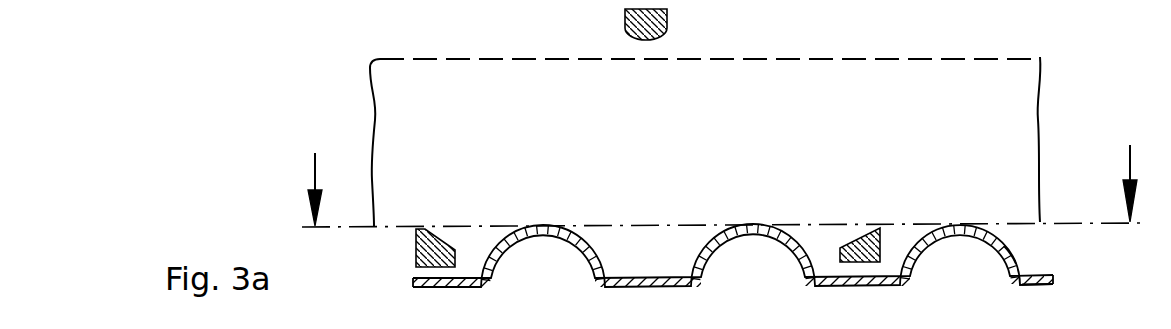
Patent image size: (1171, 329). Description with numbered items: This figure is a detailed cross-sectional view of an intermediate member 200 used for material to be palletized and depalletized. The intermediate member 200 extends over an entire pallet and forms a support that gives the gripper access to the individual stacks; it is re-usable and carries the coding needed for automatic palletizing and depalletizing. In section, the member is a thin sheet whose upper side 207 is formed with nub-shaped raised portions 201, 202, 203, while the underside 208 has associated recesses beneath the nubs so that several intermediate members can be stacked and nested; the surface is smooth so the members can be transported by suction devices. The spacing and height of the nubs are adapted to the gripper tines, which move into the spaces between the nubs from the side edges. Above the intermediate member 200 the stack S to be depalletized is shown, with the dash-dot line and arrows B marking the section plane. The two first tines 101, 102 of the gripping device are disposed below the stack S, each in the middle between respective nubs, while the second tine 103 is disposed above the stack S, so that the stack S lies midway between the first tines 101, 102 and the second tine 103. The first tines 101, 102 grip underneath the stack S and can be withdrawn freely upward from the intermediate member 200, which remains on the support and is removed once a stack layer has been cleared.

The stack S is at (1027, 95).
The section line B- B is at (721, 185).
The second tine 103 is at (668, 18).
The first tine 101 is at (418, 250).
The first tine 102 is at (865, 256).
The intermediate member 200 is at (762, 276).
The raised portion 201 is at (543, 277).
The raised portion 202 is at (753, 276).
The raised portion 203 is at (959, 277).
The upper side 207 is at (1023, 252).
The underside 208 is at (1033, 288).